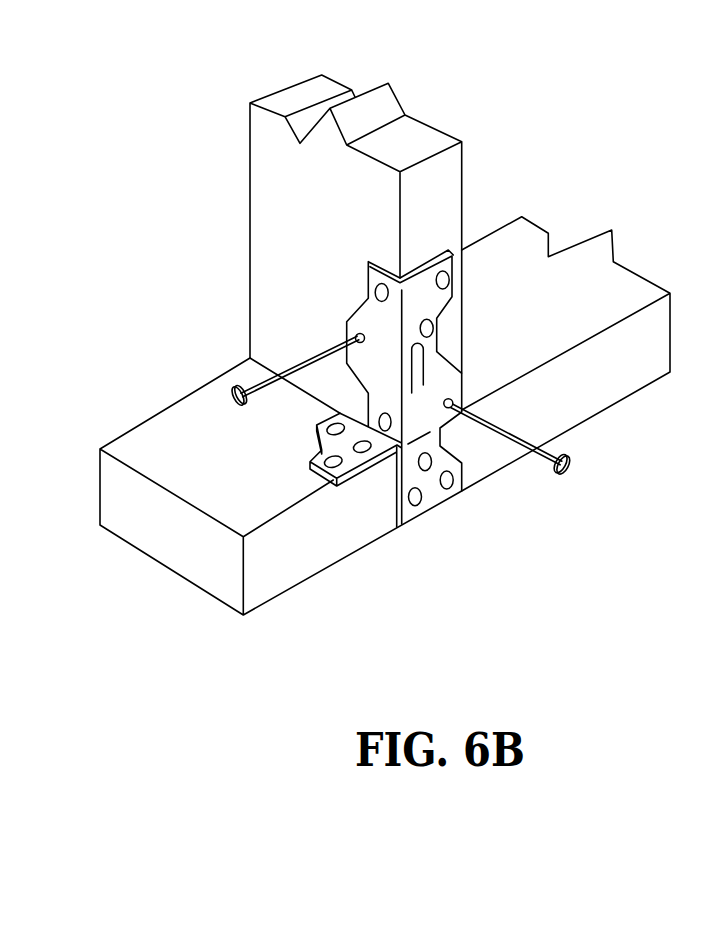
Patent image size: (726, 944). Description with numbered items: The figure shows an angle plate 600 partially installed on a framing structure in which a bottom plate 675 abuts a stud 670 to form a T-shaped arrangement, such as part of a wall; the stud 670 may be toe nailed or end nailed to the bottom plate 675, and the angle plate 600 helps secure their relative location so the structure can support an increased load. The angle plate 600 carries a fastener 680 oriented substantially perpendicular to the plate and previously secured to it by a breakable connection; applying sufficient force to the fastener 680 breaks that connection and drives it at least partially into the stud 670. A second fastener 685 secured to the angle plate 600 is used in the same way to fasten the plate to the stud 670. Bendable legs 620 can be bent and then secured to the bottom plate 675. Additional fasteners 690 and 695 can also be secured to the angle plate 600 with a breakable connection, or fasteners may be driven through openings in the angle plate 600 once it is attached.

The angle plate 600 is at (385, 325).
The bendable legs 620 is at (342, 445).
The stud 670 is at (275, 205).
The bottom plate 675 is at (177, 458).
The fastener 680 is at (235, 383).
The second fastener 685 is at (577, 452).
The fastener 690 is at (385, 293).
The fastener 695 is at (455, 482).